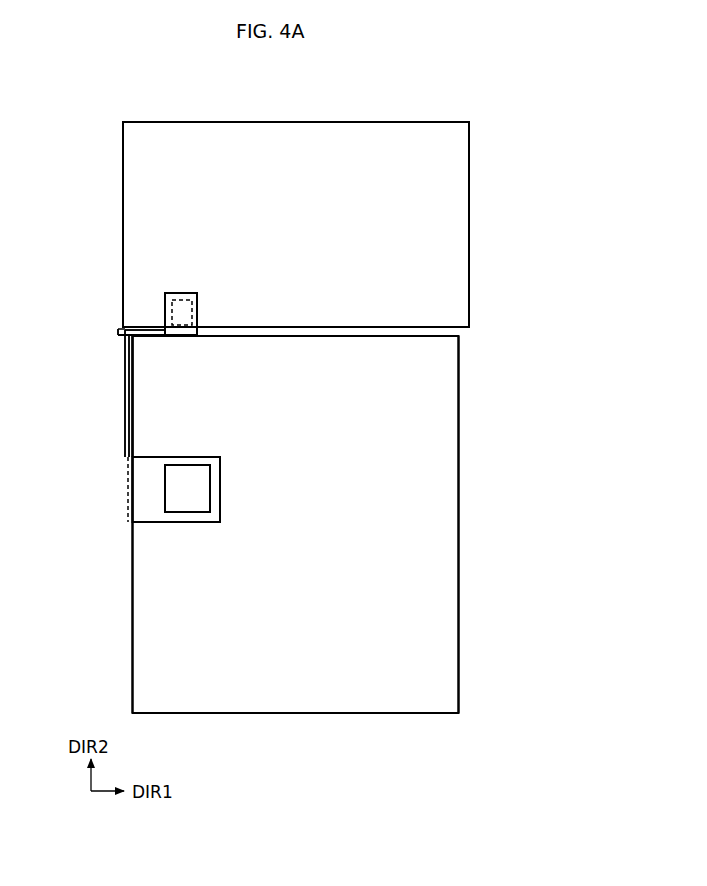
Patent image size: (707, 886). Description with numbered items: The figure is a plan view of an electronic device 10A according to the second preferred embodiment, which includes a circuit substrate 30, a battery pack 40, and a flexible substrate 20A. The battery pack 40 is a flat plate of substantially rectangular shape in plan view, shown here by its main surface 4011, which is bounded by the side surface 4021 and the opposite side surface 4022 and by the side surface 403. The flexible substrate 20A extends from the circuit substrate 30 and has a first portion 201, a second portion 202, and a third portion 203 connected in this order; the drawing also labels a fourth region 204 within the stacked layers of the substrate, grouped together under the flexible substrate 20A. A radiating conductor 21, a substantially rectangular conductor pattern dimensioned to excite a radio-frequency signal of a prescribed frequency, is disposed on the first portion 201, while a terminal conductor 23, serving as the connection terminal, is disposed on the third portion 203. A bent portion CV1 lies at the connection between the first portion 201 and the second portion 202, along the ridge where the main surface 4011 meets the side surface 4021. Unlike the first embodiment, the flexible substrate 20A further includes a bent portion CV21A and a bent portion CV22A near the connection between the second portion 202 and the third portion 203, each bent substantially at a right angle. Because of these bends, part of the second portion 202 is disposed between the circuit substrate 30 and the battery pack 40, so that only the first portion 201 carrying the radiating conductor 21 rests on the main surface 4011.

The electronic device 10A is at (464, 78).
The circuit substrate 30 is at (384, 132).
The battery pack 40 is at (450, 470).
The main surface 4011 is at (438, 420).
The side surface 4021 is at (131, 650).
The side surface 4022 is at (461, 604).
The side surface 403 is at (416, 715).
The terminal conductor 23 is at (165, 300).
The flexible substrate 20A is at (55, 338).
The first portion 201 is at (128, 457).
The second portion 202 is at (125, 405).
The third portion 203 is at (183, 337).
The fourth conductive layer 204 is at (126, 337).
The radiating conductor 21 is at (187, 500).
The bent portion CV1 is at (128, 523).
The bent portion CV21A is at (119, 331).
The bent portion CV22A is at (162, 322).